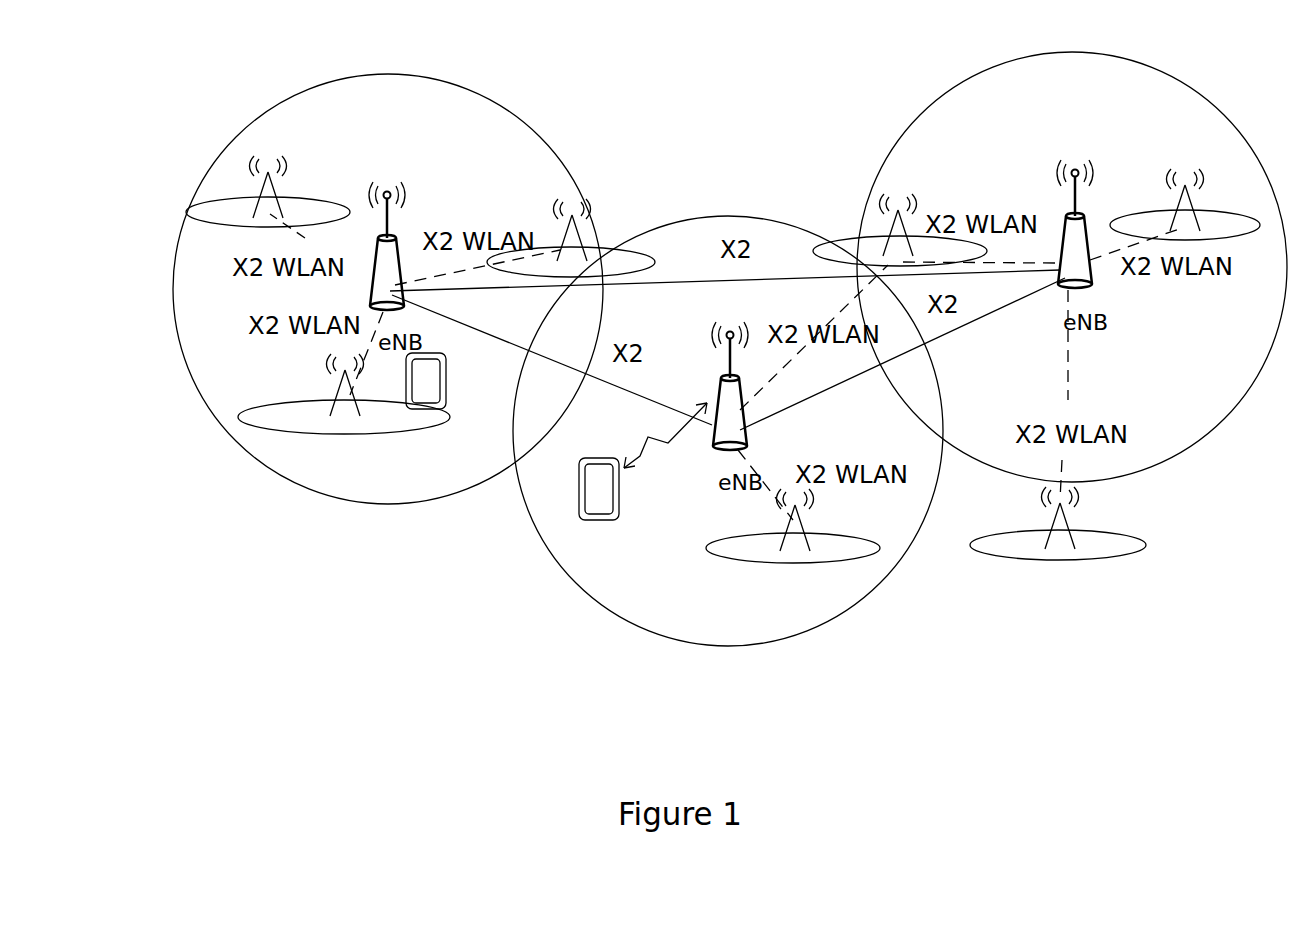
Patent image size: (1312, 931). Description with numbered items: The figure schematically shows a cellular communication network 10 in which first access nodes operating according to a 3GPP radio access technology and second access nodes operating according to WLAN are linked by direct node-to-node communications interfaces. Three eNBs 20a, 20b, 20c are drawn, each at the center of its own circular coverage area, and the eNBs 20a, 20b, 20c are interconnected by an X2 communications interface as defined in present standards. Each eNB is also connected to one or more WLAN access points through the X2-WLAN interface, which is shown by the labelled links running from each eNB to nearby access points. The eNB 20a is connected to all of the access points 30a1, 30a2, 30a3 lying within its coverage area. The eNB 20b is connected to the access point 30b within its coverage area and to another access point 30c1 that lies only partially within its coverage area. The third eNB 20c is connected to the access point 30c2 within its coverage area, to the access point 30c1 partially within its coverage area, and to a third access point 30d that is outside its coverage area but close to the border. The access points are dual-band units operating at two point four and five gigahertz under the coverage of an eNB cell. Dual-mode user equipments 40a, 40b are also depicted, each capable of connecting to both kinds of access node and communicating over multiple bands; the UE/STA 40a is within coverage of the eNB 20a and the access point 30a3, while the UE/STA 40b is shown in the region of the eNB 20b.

The cellular communication network 10 is at (700, 108).
The eNB 20a is at (400, 240).
The eNB 20b is at (800, 392).
The eNB 20c is at (1062, 217).
The WLAN access point 30a1 is at (290, 218).
The WLAN access point 30a2 is at (580, 212).
The WLAN access point 30a3 is at (343, 395).
The WLAN access point 30b is at (780, 548).
The WLAN access point 30c1 is at (884, 230).
The WLAN access point 30c2 is at (1181, 235).
The WLAN access point 30d is at (1075, 530).
The user equipment (UE/STA) 40a is at (427, 404).
The user equipment (UE/STA) 40b is at (580, 490).